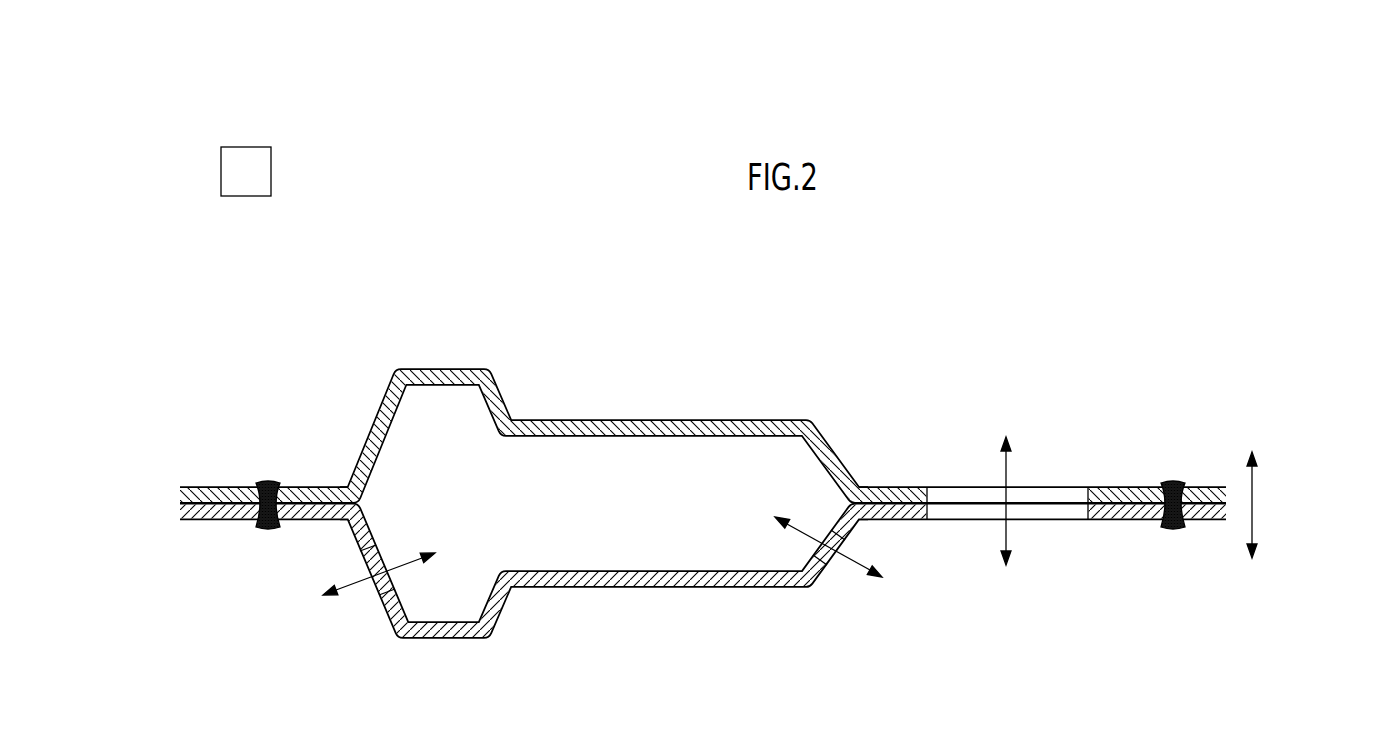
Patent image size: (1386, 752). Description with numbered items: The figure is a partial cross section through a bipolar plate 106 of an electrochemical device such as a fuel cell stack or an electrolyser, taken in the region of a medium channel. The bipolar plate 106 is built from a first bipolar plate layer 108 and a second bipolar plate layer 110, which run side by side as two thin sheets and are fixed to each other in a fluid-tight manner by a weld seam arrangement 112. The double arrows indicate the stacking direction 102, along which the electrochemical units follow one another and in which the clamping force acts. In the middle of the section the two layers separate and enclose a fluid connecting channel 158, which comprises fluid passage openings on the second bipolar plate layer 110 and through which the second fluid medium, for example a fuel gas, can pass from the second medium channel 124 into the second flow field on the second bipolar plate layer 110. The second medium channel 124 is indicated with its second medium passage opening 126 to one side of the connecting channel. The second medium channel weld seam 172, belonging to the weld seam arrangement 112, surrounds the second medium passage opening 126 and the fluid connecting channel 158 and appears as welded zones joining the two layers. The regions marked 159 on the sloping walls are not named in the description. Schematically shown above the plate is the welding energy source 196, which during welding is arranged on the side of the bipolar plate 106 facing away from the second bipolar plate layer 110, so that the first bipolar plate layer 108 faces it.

The stacking direction 102 is at (1253, 505).
The bipolar plate 106 is at (708, 399).
The first bipolar plate layer 108 is at (785, 418).
The second bipolar plate layer 110 is at (769, 577).
The weld seam arrangement 112 is at (260, 461).
The second medium channel 124 is at (958, 472).
The second medium passage opening 126 is at (1044, 494).
The fluid connecting channel 158 is at (628, 518).
The hinge region 159 is at (381, 591).
The second medium channel weld seam 172 is at (268, 528).
The welding energy source 196 is at (245, 163).